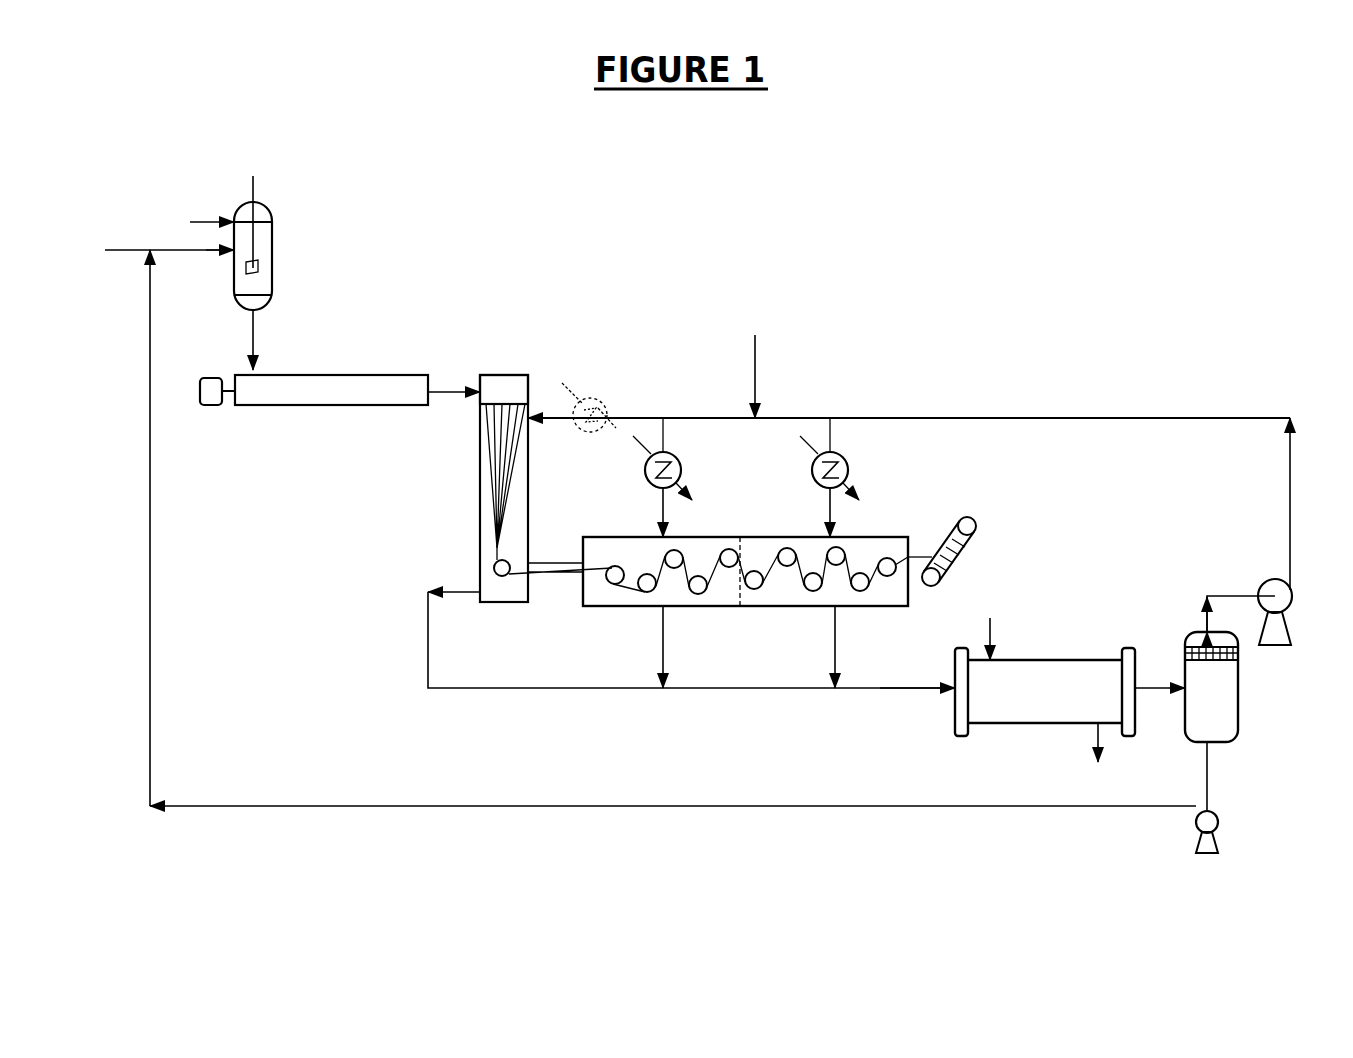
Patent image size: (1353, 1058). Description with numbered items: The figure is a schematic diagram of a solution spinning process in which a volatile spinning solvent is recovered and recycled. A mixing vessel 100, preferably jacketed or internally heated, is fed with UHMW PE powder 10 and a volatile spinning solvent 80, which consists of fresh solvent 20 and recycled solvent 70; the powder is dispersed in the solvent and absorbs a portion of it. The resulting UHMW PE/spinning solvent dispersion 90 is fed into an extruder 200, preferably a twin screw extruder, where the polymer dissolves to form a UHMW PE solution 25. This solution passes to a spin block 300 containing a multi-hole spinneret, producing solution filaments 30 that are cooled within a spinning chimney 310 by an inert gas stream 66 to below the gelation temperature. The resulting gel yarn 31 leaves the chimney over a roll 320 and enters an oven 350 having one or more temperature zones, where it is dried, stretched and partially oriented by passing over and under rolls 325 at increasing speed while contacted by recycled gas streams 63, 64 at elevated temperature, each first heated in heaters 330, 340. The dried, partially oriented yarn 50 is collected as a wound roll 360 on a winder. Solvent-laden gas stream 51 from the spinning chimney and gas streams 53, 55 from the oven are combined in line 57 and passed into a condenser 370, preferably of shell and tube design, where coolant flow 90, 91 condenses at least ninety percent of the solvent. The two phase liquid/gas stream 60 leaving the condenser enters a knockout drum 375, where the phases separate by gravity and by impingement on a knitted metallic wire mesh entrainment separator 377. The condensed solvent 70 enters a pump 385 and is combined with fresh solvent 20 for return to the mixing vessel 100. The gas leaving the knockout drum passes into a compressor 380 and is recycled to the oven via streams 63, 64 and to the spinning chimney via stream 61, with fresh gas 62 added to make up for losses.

The UHMW PE powder 10 is at (190, 218).
The fresh solvent 20 is at (147, 520).
The volatile spinning solvent 80 is at (220, 254).
The mixing vessel 100 is at (273, 208).
The UHMW PE/spinning solvent dispersion 90 is at (258, 354).
The extruder 200 is at (291, 408).
The UHMW PE solution 25 is at (440, 389).
The spin block 300 is at (512, 378).
The solution filaments 30 is at (503, 418).
The spinning chimney 310 is at (480, 495).
The gel yarn 31 is at (496, 547).
The roller 320 is at (504, 577).
The rolls 325 is at (613, 582).
The inert gas stream 66 is at (553, 422).
The heater 330 is at (645, 472).
The recycled gas stream 63 is at (668, 430).
The fresh gas 62 is at (760, 361).
The recycled gas stream 64 is at (835, 430).
The heater 340 is at (850, 470).
The oven 350 is at (753, 535).
The dried, partially oriented yarn 50 is at (927, 553).
The wound roll 360 is at (976, 540).
The gas stream 53 is at (668, 643).
The gas stream 55 is at (840, 643).
The gas stream 51 is at (428, 632).
The line 57 is at (909, 692).
The condenser 370 is at (1072, 660).
The coolant flow 91 is at (1098, 760).
The two phase liquid/gas stream 60 is at (1157, 684).
The knockout drum 375 is at (1238, 712).
The knitted metallic wire mesh entrainment separator 377 is at (1228, 660).
The compressor 380 is at (1264, 580).
The stream 61 is at (1290, 478).
The recycled solvent 70 is at (1208, 773).
The pump 385 is at (1196, 836).